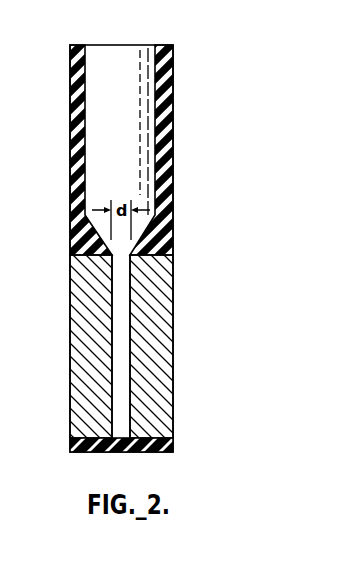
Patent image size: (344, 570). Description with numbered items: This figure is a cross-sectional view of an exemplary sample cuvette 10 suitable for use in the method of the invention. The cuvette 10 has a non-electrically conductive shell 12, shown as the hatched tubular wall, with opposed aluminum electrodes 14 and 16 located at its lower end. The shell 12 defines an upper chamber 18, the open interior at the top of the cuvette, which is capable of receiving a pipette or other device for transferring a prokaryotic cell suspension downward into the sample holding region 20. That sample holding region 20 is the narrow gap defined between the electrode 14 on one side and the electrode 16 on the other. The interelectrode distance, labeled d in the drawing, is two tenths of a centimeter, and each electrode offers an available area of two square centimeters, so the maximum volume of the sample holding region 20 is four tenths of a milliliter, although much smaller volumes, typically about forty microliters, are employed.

The sample cuvette 10 is at (201, 50).
The non-electrically conductive shell 12 is at (163, 182).
The aluminum electrode 14 is at (155, 338).
The aluminum electrode 16 is at (92, 328).
The upper chamber 18 is at (126, 101).
The sample holding region 20 is at (122, 305).